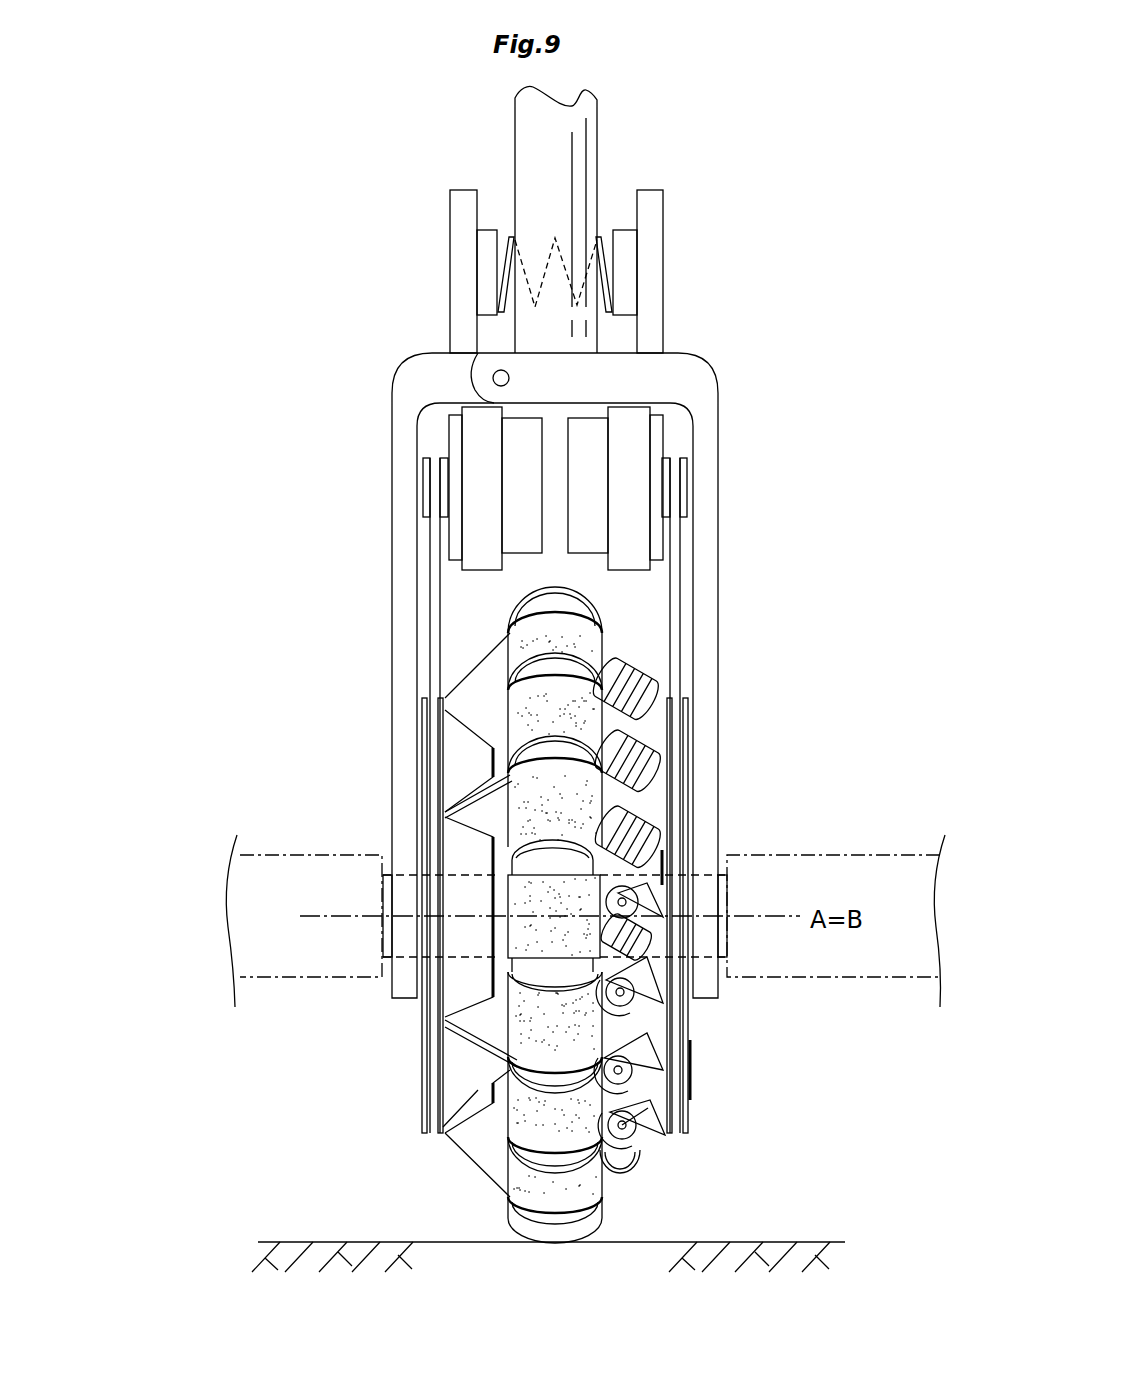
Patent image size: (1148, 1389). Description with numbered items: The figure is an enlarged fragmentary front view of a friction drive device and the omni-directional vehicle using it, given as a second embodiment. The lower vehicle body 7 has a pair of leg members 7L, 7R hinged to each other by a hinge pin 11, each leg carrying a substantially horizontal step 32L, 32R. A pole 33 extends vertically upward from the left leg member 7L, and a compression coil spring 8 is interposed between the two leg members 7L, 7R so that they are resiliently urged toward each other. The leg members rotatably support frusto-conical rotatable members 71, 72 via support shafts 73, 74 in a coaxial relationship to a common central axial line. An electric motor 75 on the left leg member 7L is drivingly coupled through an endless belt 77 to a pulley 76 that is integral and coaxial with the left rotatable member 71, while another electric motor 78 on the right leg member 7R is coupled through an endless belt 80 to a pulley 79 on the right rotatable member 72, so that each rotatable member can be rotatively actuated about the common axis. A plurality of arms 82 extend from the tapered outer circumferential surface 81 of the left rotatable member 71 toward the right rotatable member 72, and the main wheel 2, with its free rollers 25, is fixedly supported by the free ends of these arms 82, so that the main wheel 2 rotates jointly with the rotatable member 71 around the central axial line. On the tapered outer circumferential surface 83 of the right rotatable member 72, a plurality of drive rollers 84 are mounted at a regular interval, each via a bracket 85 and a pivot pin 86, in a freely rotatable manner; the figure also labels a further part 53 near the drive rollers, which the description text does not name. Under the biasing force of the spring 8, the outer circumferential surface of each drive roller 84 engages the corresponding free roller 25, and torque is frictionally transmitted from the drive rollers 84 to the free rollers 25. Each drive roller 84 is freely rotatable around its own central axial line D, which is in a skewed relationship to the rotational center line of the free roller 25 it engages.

The pole 33 is at (525, 134).
The compression coil spring 8 is at (603, 237).
The hinge pin 11 is at (492, 372).
The electric motor 75 is at (513, 448).
The electric motor 78 is at (595, 460).
The lower vehicle body 7 is at (574, 675).
The left leg member 7L is at (400, 552).
The right leg member 7R is at (706, 552).
The endless belt 77 is at (434, 613).
The endless belt 80 is at (678, 602).
The tapered outer circumferential surface 81 is at (483, 712).
The arms 82 is at (510, 775).
The pulley 76 is at (472, 1023).
The free rollers 25 is at (528, 1008).
The drive rollers 84 is at (622, 668).
The bracket 85 is at (660, 690).
The pin 53 is at (510, 773).
The pivot pin 86 is at (625, 1127).
The tapered outer circumferential surface 83 is at (662, 868).
The pulley 79 is at (690, 1068).
The central axial line D is at (670, 853).
The step 32L is at (258, 853).
The step 32R is at (875, 853).
The support shaft 73 is at (412, 875).
The support shaft 74 is at (700, 958).
The rotatable member 71 is at (463, 893).
The rotatable member 72 is at (667, 887).
The main wheel 2 is at (510, 1233).